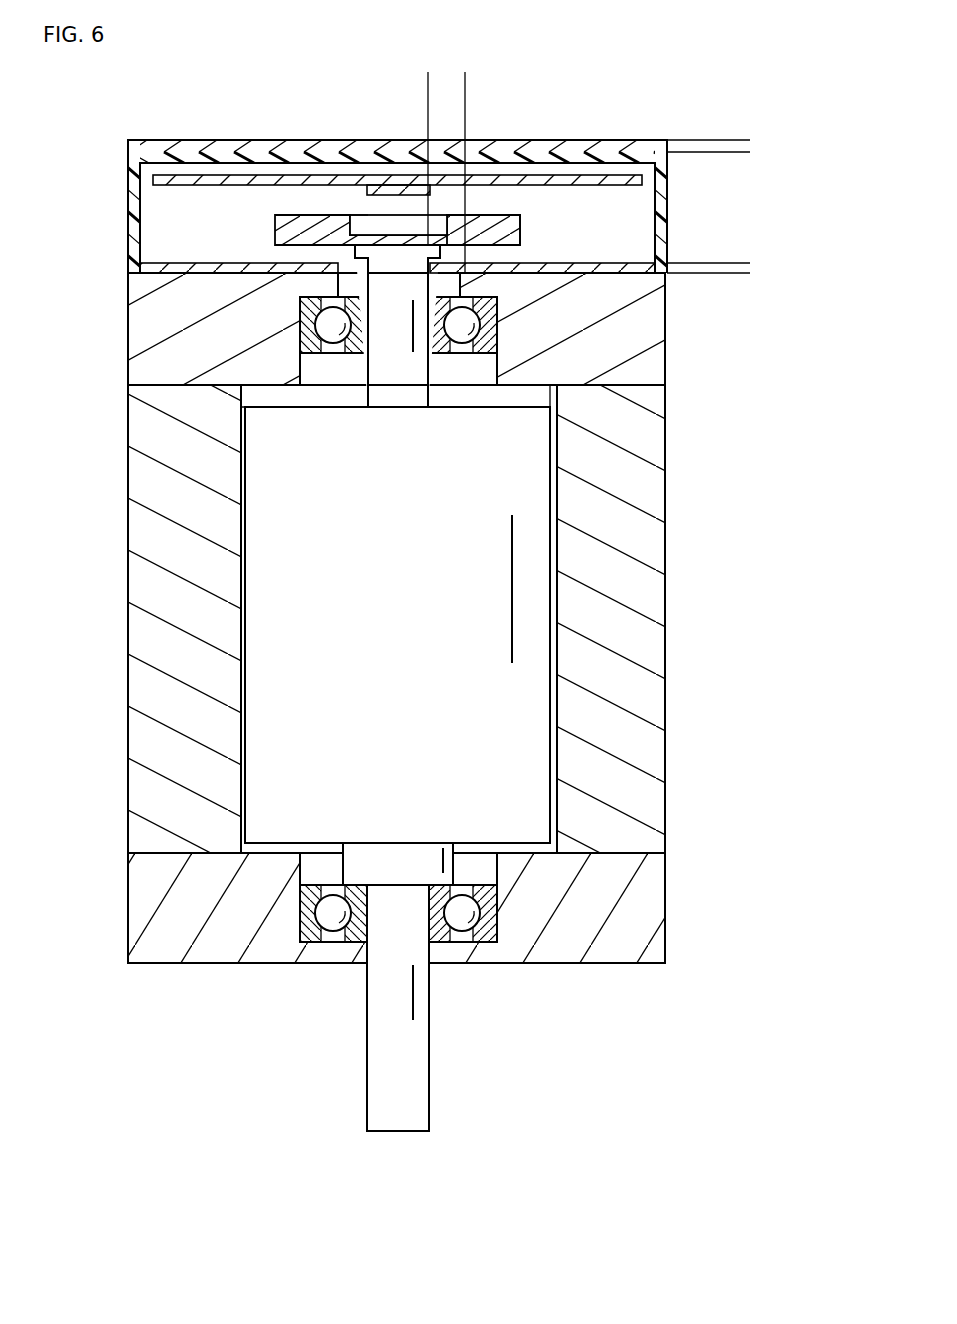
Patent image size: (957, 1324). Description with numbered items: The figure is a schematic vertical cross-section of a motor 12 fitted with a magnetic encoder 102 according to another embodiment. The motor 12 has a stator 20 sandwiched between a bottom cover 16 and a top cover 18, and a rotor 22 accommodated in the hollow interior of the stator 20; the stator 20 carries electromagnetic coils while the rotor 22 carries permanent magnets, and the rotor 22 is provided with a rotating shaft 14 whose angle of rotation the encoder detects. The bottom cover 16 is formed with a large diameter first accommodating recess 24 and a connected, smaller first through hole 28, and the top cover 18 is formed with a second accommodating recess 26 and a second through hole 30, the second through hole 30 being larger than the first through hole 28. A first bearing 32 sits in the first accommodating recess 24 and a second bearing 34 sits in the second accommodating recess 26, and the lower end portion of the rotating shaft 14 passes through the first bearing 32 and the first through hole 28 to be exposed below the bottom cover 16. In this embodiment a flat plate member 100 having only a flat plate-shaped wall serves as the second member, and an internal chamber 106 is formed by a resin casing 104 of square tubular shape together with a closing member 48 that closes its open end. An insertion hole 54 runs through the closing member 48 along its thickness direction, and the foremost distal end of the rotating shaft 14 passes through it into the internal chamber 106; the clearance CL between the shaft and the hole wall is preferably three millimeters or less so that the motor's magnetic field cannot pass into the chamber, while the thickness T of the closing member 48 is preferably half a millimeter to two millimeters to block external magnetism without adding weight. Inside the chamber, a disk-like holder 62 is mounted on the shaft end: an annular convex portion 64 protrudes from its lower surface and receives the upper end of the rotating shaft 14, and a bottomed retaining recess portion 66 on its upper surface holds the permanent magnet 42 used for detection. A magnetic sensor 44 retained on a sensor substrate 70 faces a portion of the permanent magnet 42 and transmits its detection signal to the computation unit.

The motor 12 is at (410, 603).
The rotating shaft 14 is at (383, 1050).
The bottom cover 16 is at (650, 903).
The top cover 18 is at (650, 331).
The stator 20 is at (650, 809).
The rotor 22 is at (505, 722).
The first accommodating recess 24 is at (302, 863).
The second accommodating recess 26 is at (325, 358).
The first through hole 28 is at (370, 958).
The second through hole 30 is at (340, 284).
The first bearing 32 is at (485, 935).
The second bearing 34 is at (363, 338).
The permanent magnet 42 is at (380, 225).
The magnetic sensor 44 is at (412, 192).
The closing member 48 is at (132, 270).
The insertion hole 54 is at (340, 267).
The holder 62 is at (510, 227).
The annular convex portion 64 is at (441, 249).
The retaining recess portion 66 is at (360, 218).
The sensor substrate 70 is at (333, 181).
The flat plate member 100 is at (270, 163).
The encoder 102 is at (415, 187).
The casing 104 is at (136, 193).
The internal chamber 106 is at (225, 169).
The clearance CL is at (397, 78).
The thickness T is at (743, 293).